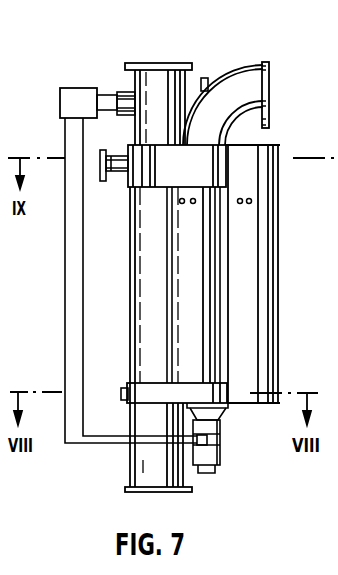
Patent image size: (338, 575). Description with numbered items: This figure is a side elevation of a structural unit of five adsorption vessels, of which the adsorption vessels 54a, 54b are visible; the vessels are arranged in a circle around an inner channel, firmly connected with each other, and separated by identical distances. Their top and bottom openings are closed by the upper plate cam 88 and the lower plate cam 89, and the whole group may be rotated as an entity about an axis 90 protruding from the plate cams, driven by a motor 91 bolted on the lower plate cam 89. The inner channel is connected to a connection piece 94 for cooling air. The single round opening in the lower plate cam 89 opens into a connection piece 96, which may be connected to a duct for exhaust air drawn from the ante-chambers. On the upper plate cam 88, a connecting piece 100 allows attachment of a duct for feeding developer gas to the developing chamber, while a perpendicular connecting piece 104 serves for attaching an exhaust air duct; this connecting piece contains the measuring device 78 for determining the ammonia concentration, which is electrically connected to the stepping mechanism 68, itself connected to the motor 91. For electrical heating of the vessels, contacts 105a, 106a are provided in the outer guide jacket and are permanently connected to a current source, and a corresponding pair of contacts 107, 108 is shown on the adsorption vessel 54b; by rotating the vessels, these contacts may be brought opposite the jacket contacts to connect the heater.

The adsorption vessel 54a is at (148, 261).
The adsorption vessel 54b is at (185, 298).
The stepping mechanism 68 is at (60, 101).
The measuring device 78 is at (122, 98).
The upper plate cam 88 is at (136, 188).
The lower plate cam 89 is at (126, 393).
The axis 90 is at (210, 80).
The motor 91 is at (210, 452).
The connection piece 94 is at (268, 91).
The connection piece 96 is at (170, 476).
The connecting piece 100 is at (120, 158).
The perpendicular connecting piece 104 is at (153, 78).
The contact 105a is at (241, 198).
The contact 106a is at (252, 201).
The contact 107 is at (182, 198).
The contact 108 is at (193, 198).